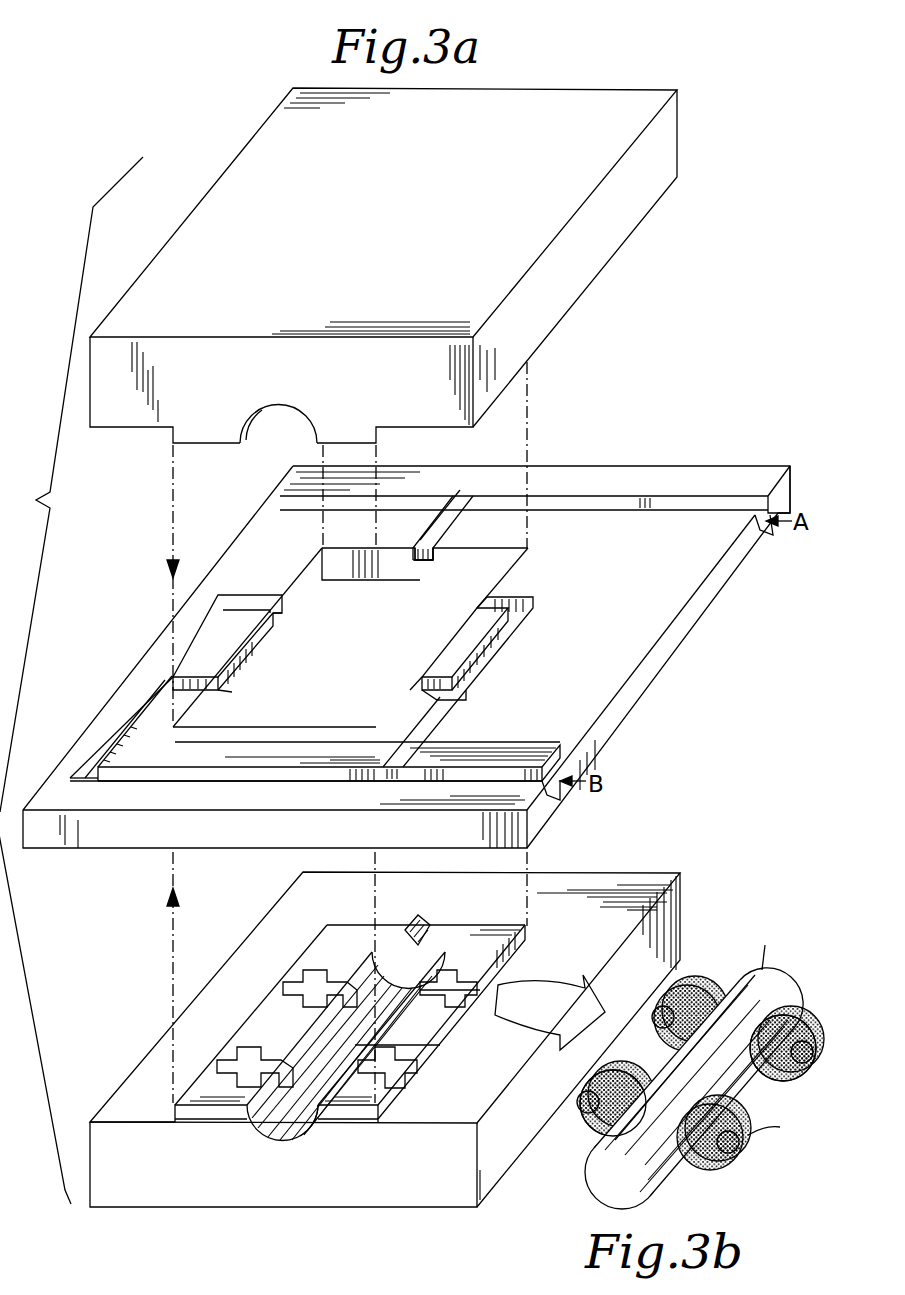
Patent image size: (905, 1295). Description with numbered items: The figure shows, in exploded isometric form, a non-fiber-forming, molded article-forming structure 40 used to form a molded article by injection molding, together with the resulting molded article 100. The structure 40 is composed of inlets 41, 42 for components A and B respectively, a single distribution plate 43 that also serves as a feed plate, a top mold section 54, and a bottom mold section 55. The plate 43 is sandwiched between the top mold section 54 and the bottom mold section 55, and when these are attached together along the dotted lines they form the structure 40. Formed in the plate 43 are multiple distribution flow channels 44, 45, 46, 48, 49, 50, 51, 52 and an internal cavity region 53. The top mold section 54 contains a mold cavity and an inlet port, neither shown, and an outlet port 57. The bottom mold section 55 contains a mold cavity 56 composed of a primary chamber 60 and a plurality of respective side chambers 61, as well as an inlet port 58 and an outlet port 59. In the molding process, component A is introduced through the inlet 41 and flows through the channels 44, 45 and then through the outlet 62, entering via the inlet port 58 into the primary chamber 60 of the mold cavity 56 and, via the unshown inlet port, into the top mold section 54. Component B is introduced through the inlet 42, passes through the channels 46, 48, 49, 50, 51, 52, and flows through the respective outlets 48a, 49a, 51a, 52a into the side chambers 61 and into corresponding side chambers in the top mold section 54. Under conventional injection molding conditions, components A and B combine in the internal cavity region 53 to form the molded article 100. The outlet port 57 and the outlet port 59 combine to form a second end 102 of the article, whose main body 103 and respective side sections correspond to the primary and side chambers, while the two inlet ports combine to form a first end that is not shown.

In FIG. 3A, the structure 40 is at (71, 680).
In FIG. 3A, the top mold section 54 is at (157, 272).
In FIG. 3A, the outlet port 57 is at (270, 440).
In FIG. 3A, the distribution plate 43 is at (140, 642).
In FIG. 3A, the distribution flow channel 44 is at (605, 503).
In FIG. 3A, the inlet 41 is at (768, 537).
In FIG. 3A, the distribution flow channel 50 is at (123, 718).
In FIG. 3A, the internal cavity region 53 is at (462, 595).
In FIG. 3A, the outlet 62 is at (409, 578).
In FIG. 3A, the distribution flow channel 45 is at (436, 518).
In FIG. 3A, the distribution flow channel 51 is at (190, 674).
In FIG. 3A, the outlet 51a is at (220, 692).
In FIG. 3A, the distribution flow channel 52 is at (238, 605).
In FIG. 3A, the outlet 52a is at (278, 620).
In FIG. 3A, the distribution flow channel 49 is at (513, 620).
In FIG. 3A, the outlet 49a is at (480, 604).
In FIG. 3A, the distribution flow channel 48 is at (457, 692).
In FIG. 3A, the outlet 48a is at (420, 684).
In FIG. 3A, the distribution flow channel 46 is at (480, 773).
In FIG. 3A, the inlet 42 is at (550, 792).
In FIG. 3A, the bottom mold section 55 is at (337, 1197).
In FIG. 3A, the mold cavity 56 is at (232, 1126).
In FIG. 3A, the outlet port 59 is at (263, 1138).
In FIG. 3A, the primary chamber 60 is at (296, 1123).
In FIG. 3A, the inlet port 58 is at (430, 935).
In FIG. 3A, the side chambers 61 is at (283, 984).
In FIG. 3B, the molded article 100 is at (685, 1059).
In FIG. 3B, the second end 102 is at (603, 1190).
In FIG. 3B, the main body 103 is at (770, 976).